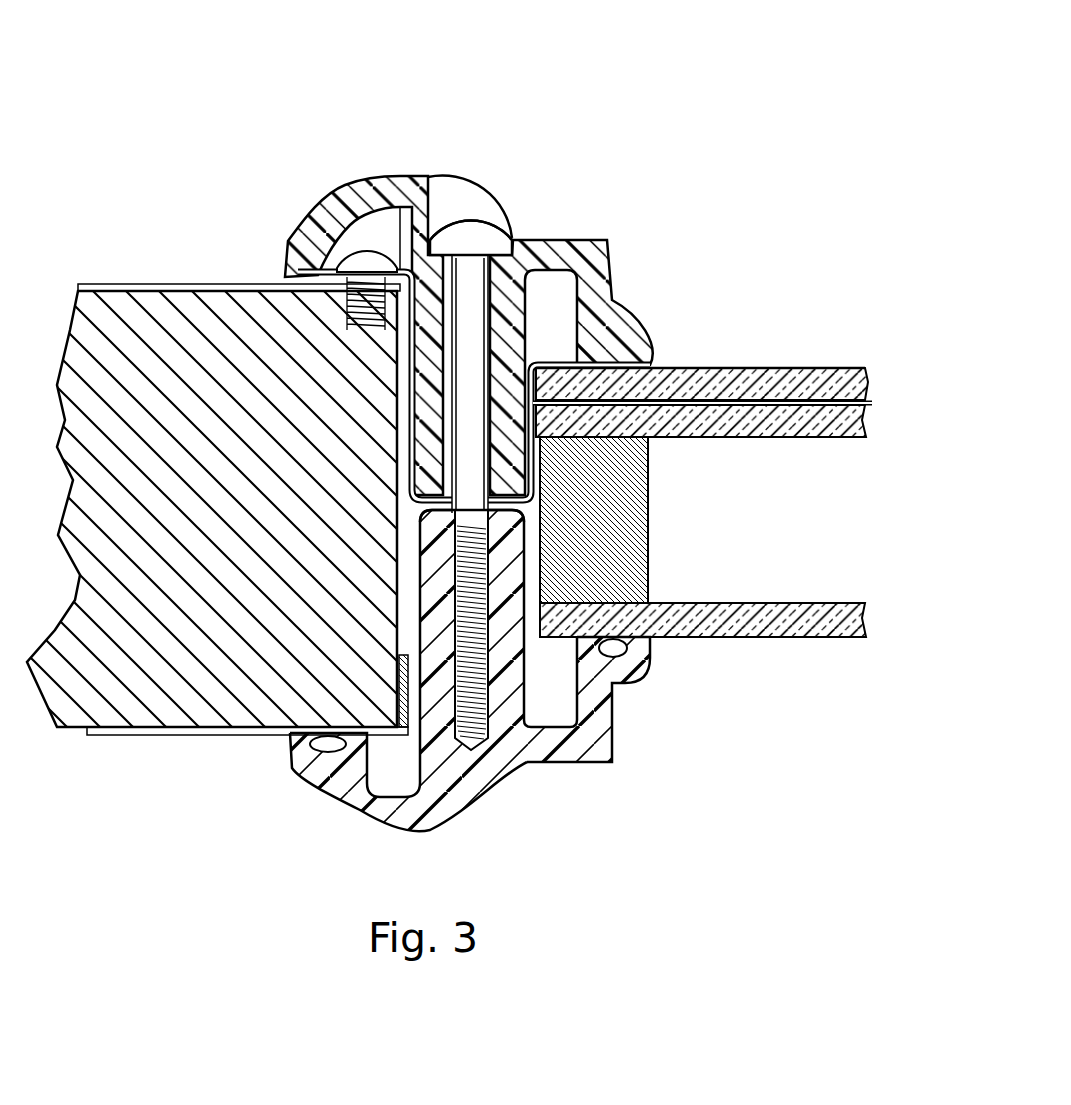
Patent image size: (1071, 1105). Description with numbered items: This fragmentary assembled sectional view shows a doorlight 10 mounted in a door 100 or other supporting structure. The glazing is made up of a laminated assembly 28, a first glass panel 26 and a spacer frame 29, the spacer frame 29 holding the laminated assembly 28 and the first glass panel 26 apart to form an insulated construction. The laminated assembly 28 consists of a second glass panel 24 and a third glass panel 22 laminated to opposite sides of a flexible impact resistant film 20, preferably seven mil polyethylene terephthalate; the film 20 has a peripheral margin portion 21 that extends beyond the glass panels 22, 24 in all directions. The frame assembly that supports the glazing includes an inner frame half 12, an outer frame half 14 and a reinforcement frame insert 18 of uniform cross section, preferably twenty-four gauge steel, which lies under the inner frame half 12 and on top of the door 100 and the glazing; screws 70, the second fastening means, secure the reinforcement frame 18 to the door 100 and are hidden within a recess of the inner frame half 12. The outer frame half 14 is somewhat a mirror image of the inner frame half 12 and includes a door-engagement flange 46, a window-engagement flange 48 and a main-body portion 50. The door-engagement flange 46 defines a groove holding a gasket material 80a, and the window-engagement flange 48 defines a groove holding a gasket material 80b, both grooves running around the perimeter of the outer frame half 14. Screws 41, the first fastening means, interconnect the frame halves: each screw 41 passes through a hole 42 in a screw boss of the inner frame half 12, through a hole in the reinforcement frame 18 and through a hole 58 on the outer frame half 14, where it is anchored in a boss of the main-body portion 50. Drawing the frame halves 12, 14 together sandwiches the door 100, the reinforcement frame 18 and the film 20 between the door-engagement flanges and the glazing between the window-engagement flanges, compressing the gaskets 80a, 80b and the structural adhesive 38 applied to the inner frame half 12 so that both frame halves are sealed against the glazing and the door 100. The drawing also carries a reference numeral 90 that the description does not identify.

The doorlight 10 is at (721, 122).
The inner frame half 12 is at (545, 240).
The outer frame half 14 is at (520, 765).
The reinforcement frame insert 18 is at (405, 258).
The flexible impact resistant film 20 is at (872, 406).
The peripheral margin portion 21 is at (535, 497).
The third glass panel 22 is at (815, 368).
The second glass panel 24 is at (800, 440).
The first glass panel 26 is at (805, 640).
The laminated assembly 28 is at (775, 366).
The spacer frame 29 is at (650, 510).
The structural adhesive 38 is at (293, 273).
The screws 41 is at (470, 268).
The hole 42 is at (495, 242).
The door-engagement flange 46 is at (300, 775).
The window-engagement flange 48 is at (612, 740).
The main-body portion 50 is at (485, 798).
The holes 58 is at (460, 790).
The screws 70 is at (355, 207).
The gasket material 80a is at (295, 755).
The gasket material 80b is at (650, 640).
The cavity 90 is at (440, 197).
The door 100 is at (215, 285).